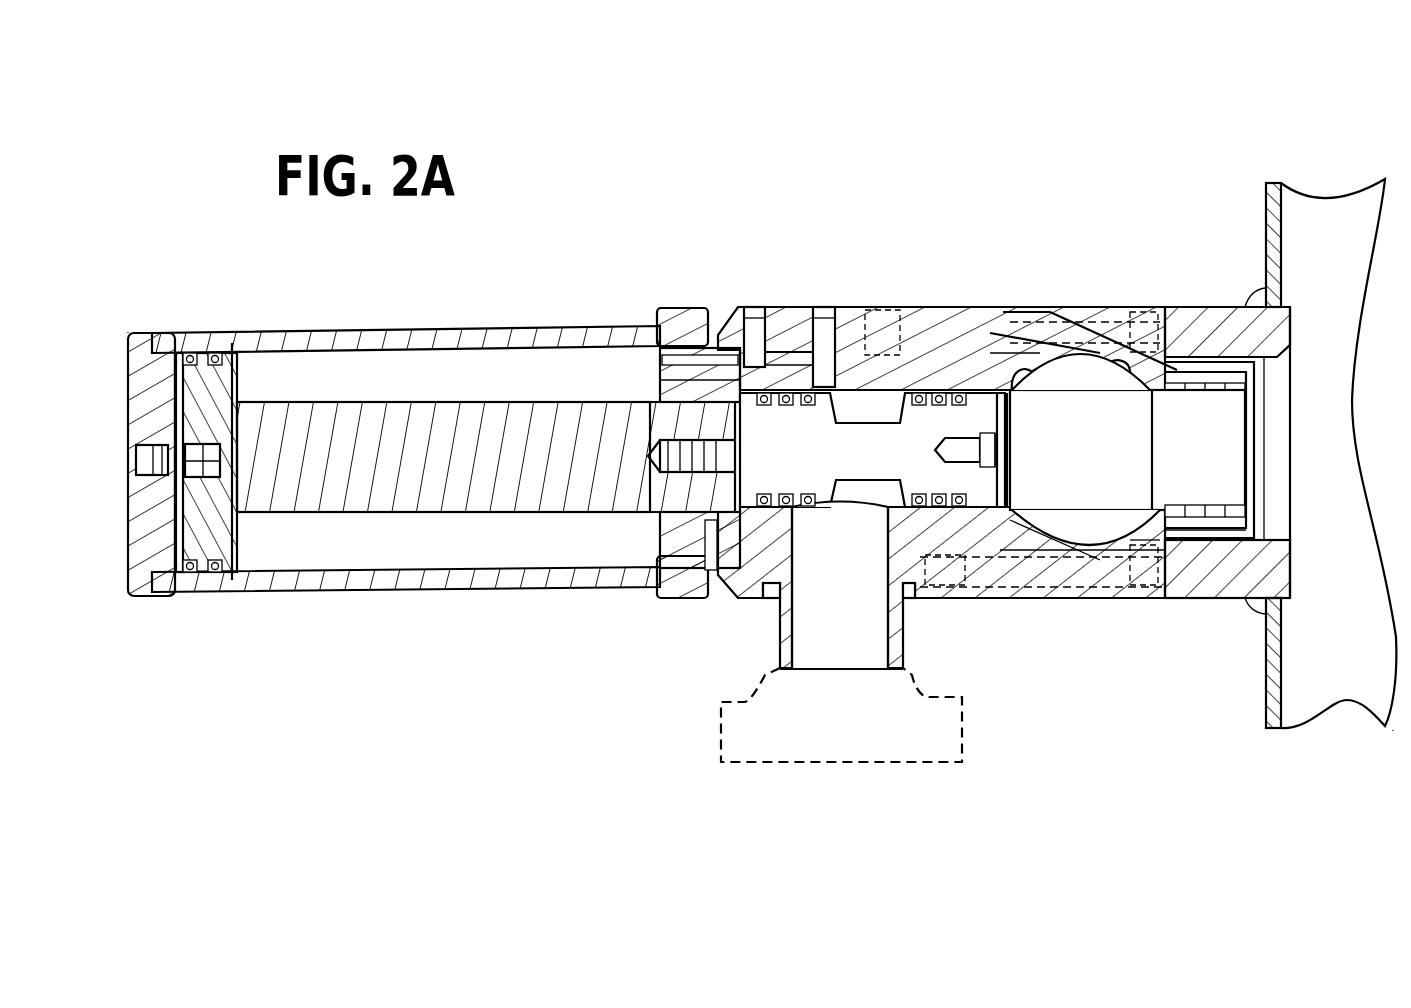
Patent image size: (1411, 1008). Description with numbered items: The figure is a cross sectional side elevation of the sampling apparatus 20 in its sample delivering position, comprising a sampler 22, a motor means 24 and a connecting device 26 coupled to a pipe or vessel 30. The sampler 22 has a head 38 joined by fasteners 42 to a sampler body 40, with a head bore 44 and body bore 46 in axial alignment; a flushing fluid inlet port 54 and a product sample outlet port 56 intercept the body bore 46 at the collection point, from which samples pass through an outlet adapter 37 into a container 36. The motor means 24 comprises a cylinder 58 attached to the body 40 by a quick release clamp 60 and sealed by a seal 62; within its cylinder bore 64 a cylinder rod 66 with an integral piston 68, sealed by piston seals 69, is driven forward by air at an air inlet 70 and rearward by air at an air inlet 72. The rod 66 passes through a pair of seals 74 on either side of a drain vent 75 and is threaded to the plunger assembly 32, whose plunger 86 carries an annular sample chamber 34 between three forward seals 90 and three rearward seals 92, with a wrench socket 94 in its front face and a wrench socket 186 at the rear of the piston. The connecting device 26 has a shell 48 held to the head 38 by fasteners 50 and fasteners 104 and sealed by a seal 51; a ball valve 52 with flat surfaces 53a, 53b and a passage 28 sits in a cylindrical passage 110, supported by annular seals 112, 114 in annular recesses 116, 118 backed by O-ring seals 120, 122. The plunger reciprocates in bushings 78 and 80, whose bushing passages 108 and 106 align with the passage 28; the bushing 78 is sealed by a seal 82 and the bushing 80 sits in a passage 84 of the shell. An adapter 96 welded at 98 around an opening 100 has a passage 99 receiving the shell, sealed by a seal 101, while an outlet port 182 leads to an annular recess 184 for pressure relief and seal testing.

The sampling apparatus 20 is at (760, 373).
The sampler 22 is at (978, 442).
The motor means 24 is at (430, 439).
The connecting device 26 is at (1221, 443).
The bore or passage 28 is at (1004, 530).
The pipe or vessel 30 is at (1306, 488).
The plunger assembly 32 is at (872, 450).
The sample chamber 34 is at (841, 578).
The container 36 is at (809, 715).
The outlet adapter 37 is at (764, 690).
The head 38 is at (952, 315).
The sampler body 40 is at (841, 307).
The fasteners 42 is at (889, 298).
The head bore 44 is at (1042, 634).
The body bore 46 is at (801, 434).
The shell 48 is at (1045, 274).
The fasteners 50 is at (1082, 614).
The seal 51 is at (1016, 292).
The ball valve 52 is at (1086, 506).
The flat surface 53a is at (953, 450).
The flat surface 53b is at (1127, 450).
The flushing fluid inlet port 54 is at (792, 305).
The product sample outlet port 56 is at (815, 625).
The cylinder 58 is at (406, 317).
The quick release clamp 60 is at (654, 305).
The seal 62 is at (645, 563).
The cylinder bore 64 is at (406, 612).
The cylinder rod 66 is at (486, 439).
The piston 68 is at (242, 461).
The piston seals 69 is at (201, 310).
The air inlet 70 is at (147, 501).
The air inlet 72 is at (737, 305).
The seals 74 is at (659, 458).
The drain vent 75 is at (660, 594).
The bushing 78 is at (1042, 602).
The bushing 80 is at (1252, 450).
The seal 82 is at (940, 604).
The passage 84 is at (1205, 316).
The plunger 86 is at (814, 564).
The seals 90 is at (861, 449).
The seals 92 is at (786, 433).
The wrench socket 94 is at (1006, 437).
The adapter 96 is at (1258, 569).
The weld 98 is at (1236, 490).
The passage 99 is at (1256, 517).
The opening 100 is at (1255, 332).
The seal 101 is at (1205, 265).
The fasteners 104 is at (1153, 245).
The bushing passage 106 is at (1256, 494).
The bushing passage 108 is at (1044, 626).
The cylindrical passage 110 is at (1085, 256).
The annular seal 112 is at (1112, 629).
The annular seal 114 is at (1163, 613).
The annular recess 116 is at (1090, 261).
The annular recess 118 is at (1085, 286).
The O-ring seal 120 is at (986, 378).
The O-ring seal 122 is at (1147, 309).
The outlet port 182 is at (1030, 450).
The annular recess 184 is at (1040, 460).
The wrench socket 186 is at (213, 615).